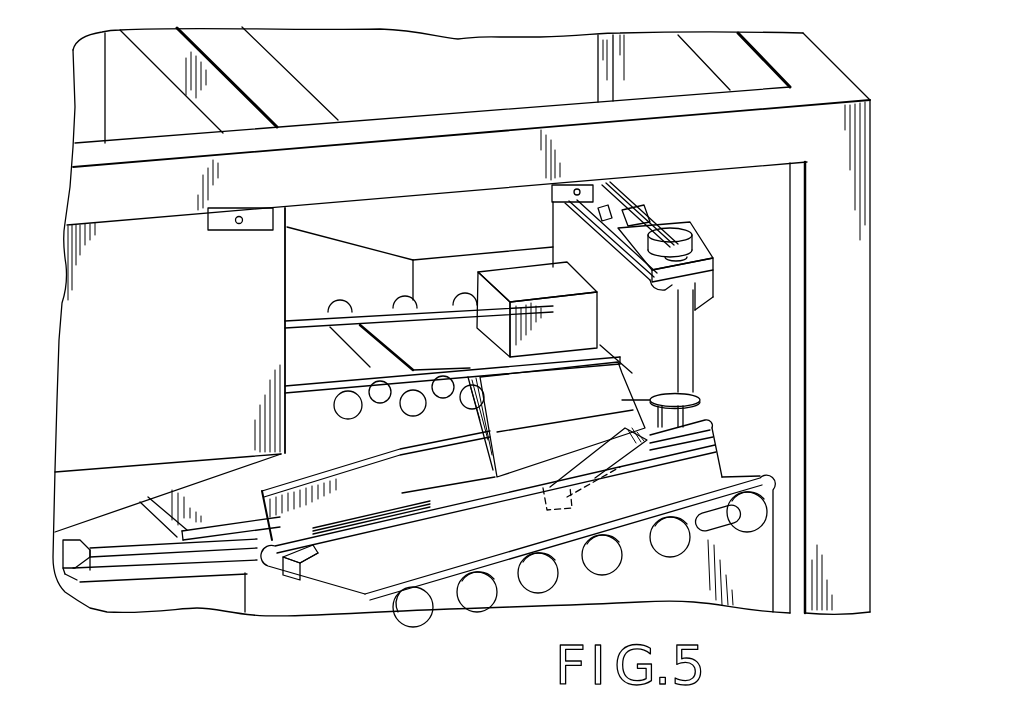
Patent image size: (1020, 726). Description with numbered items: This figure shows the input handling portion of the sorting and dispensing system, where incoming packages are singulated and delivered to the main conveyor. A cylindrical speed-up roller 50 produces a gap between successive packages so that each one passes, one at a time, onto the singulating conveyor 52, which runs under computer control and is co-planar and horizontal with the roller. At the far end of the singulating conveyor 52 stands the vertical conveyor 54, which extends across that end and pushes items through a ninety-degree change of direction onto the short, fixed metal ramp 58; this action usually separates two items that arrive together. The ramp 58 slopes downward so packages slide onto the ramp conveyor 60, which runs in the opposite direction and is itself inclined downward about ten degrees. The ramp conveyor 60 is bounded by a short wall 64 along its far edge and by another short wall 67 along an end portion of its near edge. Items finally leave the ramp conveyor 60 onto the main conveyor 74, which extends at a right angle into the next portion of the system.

The speed-up roller 50 is at (368, 328).
The singulating conveyor 52 is at (440, 322).
The vertical conveyor 54 is at (677, 343).
The ramp 58 is at (692, 392).
The ramp conveyor 60 is at (407, 512).
The short wall 64 is at (557, 521).
The short wall 67 is at (337, 471).
The main conveyor 74 is at (213, 592).